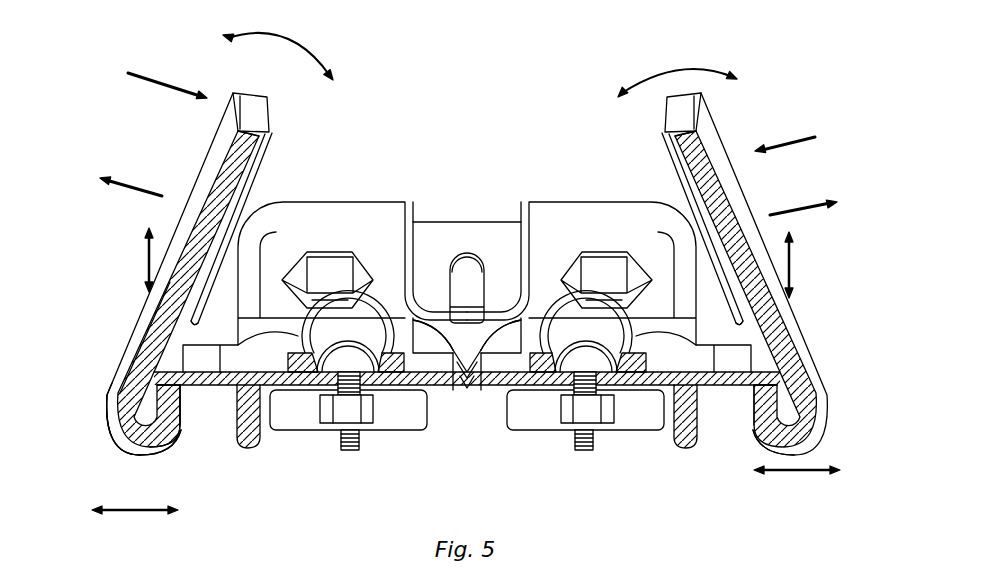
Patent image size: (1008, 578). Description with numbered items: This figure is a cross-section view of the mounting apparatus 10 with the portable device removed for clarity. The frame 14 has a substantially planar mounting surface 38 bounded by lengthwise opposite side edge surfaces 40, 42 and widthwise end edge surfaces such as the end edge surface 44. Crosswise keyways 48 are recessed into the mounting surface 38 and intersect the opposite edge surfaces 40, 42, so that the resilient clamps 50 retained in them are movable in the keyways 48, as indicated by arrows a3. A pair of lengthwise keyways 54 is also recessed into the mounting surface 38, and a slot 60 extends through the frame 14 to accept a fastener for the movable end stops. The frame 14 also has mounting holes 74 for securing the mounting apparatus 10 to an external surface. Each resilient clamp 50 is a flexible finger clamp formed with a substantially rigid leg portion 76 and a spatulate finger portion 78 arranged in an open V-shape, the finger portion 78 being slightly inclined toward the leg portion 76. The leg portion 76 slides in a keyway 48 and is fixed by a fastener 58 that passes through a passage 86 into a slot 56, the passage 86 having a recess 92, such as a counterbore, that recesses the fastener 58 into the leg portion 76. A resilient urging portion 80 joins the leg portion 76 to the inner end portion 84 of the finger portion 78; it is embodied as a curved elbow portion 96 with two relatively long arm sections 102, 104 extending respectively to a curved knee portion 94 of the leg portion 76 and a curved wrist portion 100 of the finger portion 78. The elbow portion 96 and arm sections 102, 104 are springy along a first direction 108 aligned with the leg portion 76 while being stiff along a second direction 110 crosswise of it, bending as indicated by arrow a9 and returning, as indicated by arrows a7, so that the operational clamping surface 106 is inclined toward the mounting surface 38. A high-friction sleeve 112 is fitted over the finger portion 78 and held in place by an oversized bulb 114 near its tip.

The mounting apparatus 10 is at (447, 285).
The frame 14 is at (682, 450).
The mounting surface 38 is at (580, 212).
The side edge surface 40 is at (700, 433).
The side edge surface 42 is at (238, 432).
The end edge surface 44 is at (553, 205).
The keyways 48 is at (443, 222).
The resilient clamp 50 is at (118, 395).
The keyways 54 is at (495, 330).
The slot 56 is at (400, 384).
The fastener 58 is at (340, 450).
The slot 60 is at (467, 252).
The mounting holes 74 is at (323, 253).
The leg portion 76 is at (303, 386).
The finger portion 78 is at (225, 190).
The resilient urging portion 80 is at (127, 455).
The inner end portion 84 is at (165, 322).
The passage 86 is at (372, 380).
The recess 92 is at (427, 327).
The knee portion 94 is at (180, 388).
The elbow portion 96 is at (143, 455).
The wrist portion 100 is at (146, 352).
The arm section 102 is at (122, 417).
The arm section 104 is at (177, 423).
The operational clamping surface 106 is at (256, 160).
The first direction 108 is at (285, 33).
The second direction 110 is at (145, 258).
The sleeve 112 is at (253, 117).
The bulb 114 is at (263, 133).
The arrows a3 is at (137, 512).
The arrows a7 is at (152, 85).
The arrow a9 is at (122, 190).